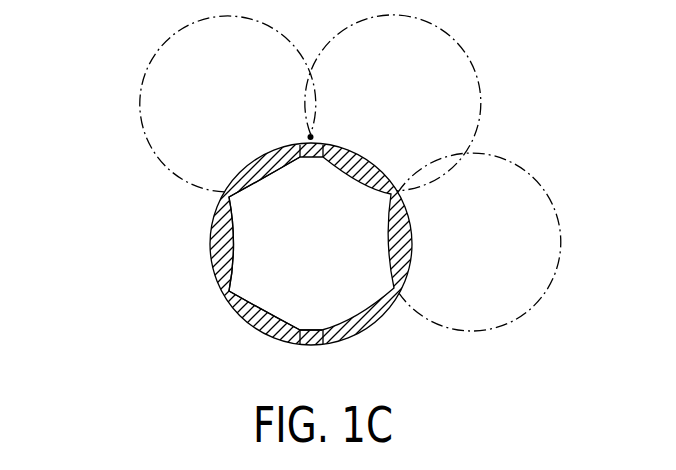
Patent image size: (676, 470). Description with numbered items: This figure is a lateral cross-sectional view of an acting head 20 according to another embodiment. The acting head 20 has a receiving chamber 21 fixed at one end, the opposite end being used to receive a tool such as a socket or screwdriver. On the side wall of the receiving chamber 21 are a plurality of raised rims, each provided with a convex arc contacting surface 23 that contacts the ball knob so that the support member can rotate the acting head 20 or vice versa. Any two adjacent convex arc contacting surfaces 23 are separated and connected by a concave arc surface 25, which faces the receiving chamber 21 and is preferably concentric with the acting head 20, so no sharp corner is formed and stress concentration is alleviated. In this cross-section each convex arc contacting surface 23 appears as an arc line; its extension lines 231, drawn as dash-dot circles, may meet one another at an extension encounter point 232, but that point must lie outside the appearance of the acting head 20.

The acting head 20 is at (237, 300).
The receiving chamber 21 is at (340, 278).
The convex arc contacting surface 23 is at (274, 182).
The concave arc surface 25 is at (255, 325).
The extension line 231 is at (168, 168).
The extension encounter point 232 is at (310, 137).